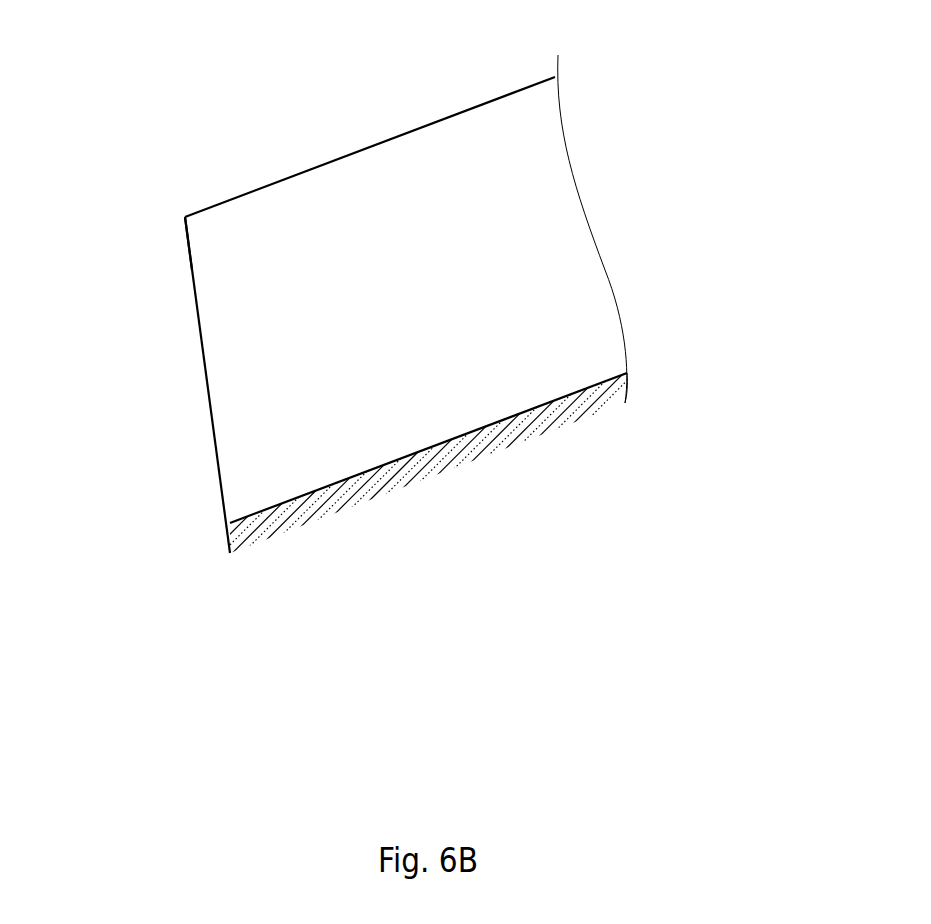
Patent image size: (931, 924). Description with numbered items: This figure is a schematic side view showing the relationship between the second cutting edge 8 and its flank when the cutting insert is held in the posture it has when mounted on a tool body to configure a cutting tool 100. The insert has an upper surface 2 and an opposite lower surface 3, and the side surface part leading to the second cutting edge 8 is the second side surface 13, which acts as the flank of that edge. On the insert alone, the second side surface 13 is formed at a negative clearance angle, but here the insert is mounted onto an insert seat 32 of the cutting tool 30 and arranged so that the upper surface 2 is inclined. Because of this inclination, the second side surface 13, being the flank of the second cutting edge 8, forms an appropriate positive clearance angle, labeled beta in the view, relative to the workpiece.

The cutting tool 100 is at (655, 162).
The upper surface 2 is at (363, 149).
The second cutting edge 8 is at (184, 218).
The second side surface 13 is at (215, 458).
The lower surface 3 is at (424, 450).
The insert seat 32 is at (580, 384).
The cutting tool body 30 is at (628, 383).